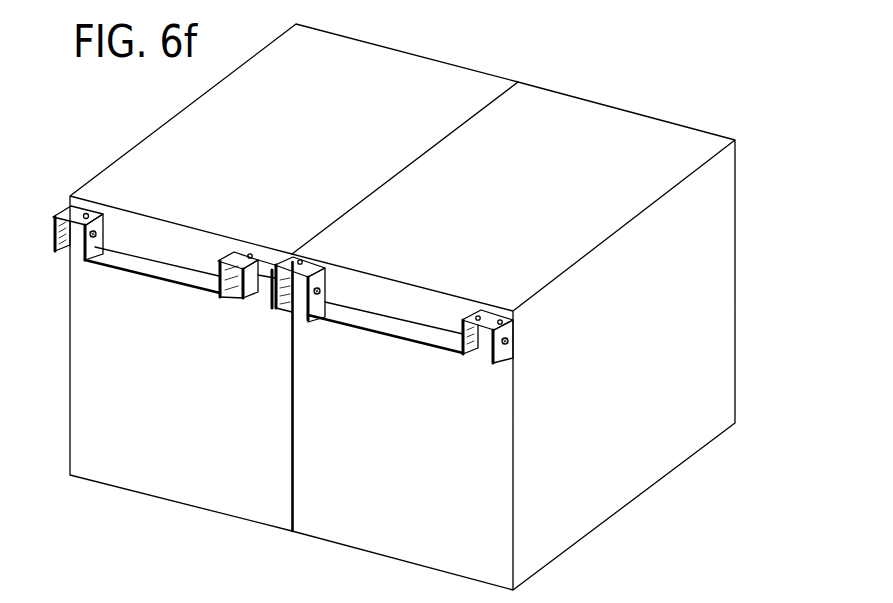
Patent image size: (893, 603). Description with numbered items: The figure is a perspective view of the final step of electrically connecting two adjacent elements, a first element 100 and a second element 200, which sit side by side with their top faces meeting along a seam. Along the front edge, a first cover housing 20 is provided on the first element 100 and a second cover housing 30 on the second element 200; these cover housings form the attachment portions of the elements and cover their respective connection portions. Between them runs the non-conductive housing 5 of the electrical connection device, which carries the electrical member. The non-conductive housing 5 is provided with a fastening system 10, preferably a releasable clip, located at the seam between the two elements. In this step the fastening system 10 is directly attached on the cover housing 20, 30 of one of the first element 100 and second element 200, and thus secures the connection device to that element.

The non-conductive housing 5 is at (226, 275).
The fastening system 10 is at (254, 258).
The first cover housing 20 is at (63, 210).
The second cover housing 30 is at (493, 320).
The first element 100 is at (150, 152).
The second element 200 is at (650, 138).